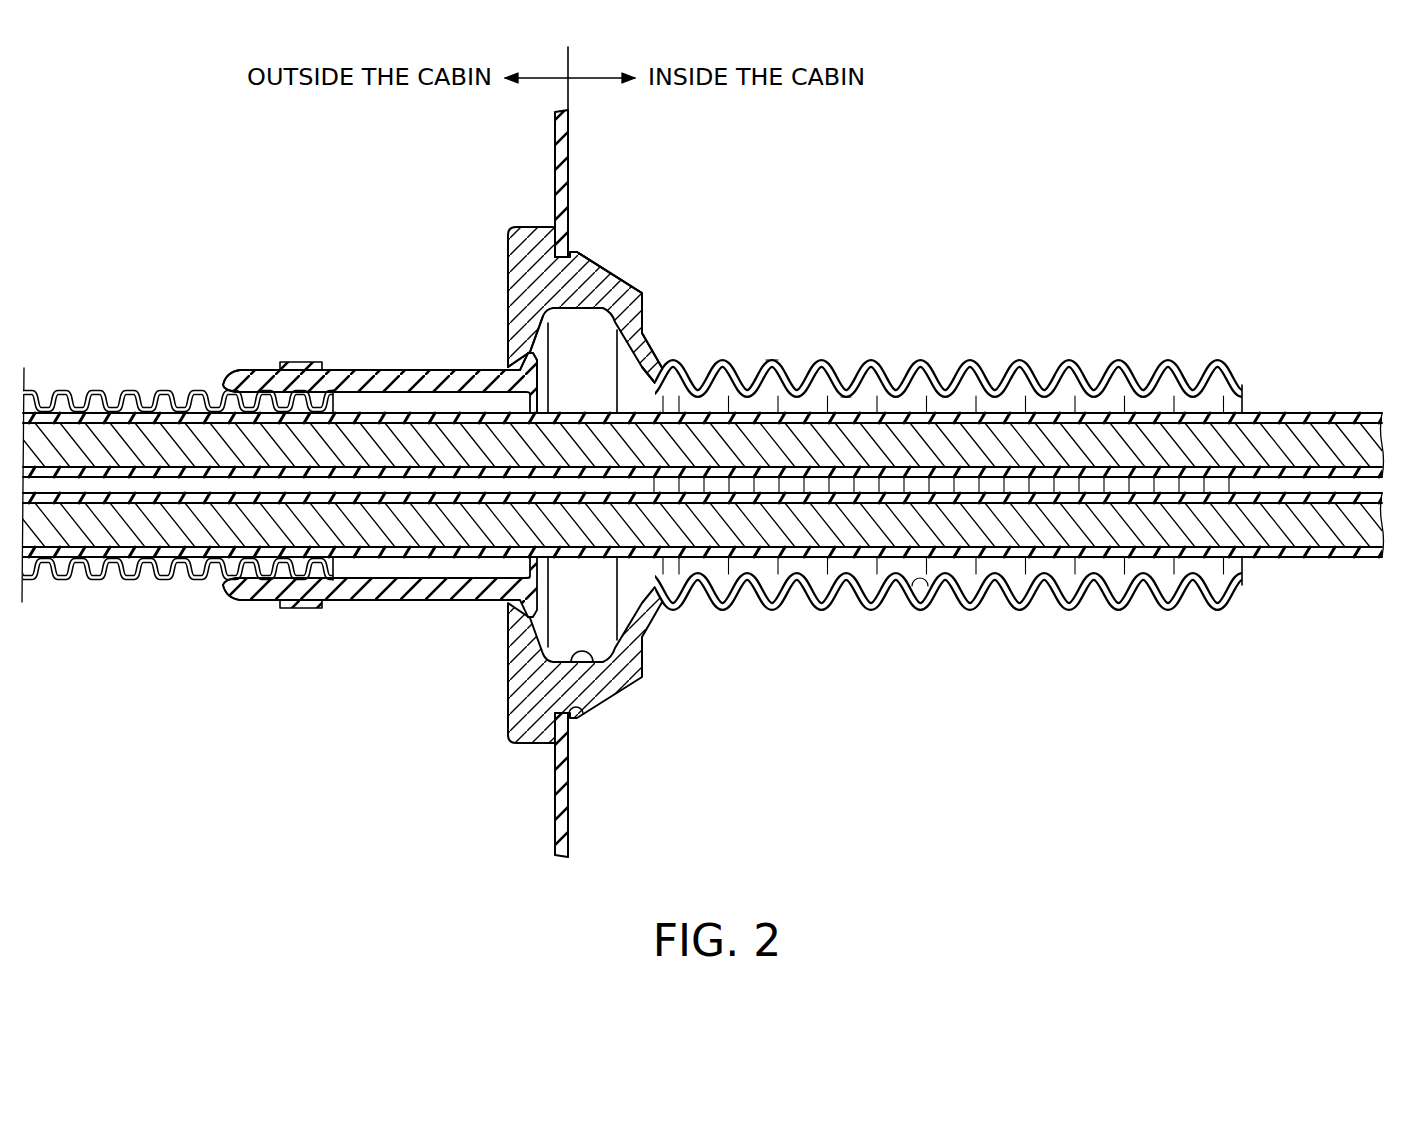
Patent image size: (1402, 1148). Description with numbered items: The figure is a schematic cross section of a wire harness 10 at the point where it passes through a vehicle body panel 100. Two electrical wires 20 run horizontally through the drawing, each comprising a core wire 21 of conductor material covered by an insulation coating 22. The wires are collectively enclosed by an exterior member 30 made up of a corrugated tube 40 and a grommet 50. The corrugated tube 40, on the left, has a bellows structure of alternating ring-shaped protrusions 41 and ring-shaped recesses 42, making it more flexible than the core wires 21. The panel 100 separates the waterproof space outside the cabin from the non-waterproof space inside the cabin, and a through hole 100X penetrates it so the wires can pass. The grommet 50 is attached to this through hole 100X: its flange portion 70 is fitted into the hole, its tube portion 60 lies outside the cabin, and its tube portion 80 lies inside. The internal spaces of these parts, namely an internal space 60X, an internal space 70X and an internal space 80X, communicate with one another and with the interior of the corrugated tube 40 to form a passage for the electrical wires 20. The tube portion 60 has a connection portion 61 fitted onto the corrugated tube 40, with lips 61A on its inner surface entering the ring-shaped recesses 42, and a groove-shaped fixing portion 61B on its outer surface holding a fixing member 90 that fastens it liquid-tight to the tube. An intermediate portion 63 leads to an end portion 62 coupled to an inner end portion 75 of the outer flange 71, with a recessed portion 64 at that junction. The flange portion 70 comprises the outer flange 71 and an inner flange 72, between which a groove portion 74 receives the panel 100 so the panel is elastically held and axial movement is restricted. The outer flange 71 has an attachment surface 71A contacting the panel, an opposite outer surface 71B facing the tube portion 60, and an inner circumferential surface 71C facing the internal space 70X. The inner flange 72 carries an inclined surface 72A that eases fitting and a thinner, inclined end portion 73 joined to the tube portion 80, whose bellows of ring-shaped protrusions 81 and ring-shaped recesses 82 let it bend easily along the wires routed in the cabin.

The wire harness 10 is at (1246, 166).
The electrical wire 20 is at (1275, 358).
The core wire 21 is at (1290, 440).
The insulation coating 22 is at (1356, 418).
The exterior member 30 is at (252, 656).
The corrugated tube 40 is at (180, 582).
The ring-shaped protrusion 41 is at (53, 388).
The ring-shaped recess 42 is at (86, 392).
The grommet 50 is at (238, 598).
The tube portion 60 is at (440, 592).
The internal space of tube portion 60X is at (362, 574).
The connection portion 61 is at (264, 372).
The lip 61A is at (228, 382).
The fixing portion 61B is at (318, 362).
The end portion 62 is at (538, 370).
The intermediate portion 63 is at (393, 370).
The recessed portion 64 is at (514, 358).
The flange portion 70 is at (526, 736).
The internal space of flange portion 70X is at (594, 666).
The outer flange 71 is at (540, 234).
The attachment surface 71A is at (568, 238).
The outer surface 71B is at (506, 264).
The inner circumferential surface 71C is at (544, 332).
The inner flange 72 is at (642, 292).
The inclined surface 72A is at (612, 270).
The end portion 73 is at (650, 348).
The groove portion 74 is at (577, 252).
The inner end portion 75 is at (520, 332).
The tube portion 80 is at (777, 612).
The internal space of tube portion 80X is at (920, 587).
The ring-shaped protrusion 81 is at (780, 362).
The ring-shaped recess 82 is at (848, 378).
The fixing member 90 is at (296, 362).
The panel 100 is at (570, 150).
The through hole 100X is at (576, 714).